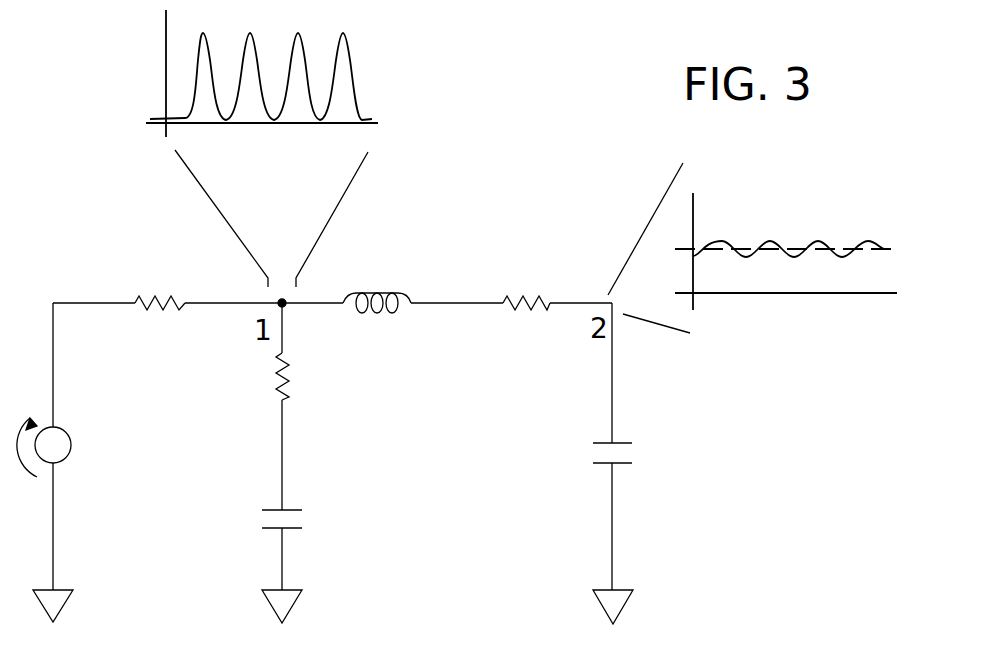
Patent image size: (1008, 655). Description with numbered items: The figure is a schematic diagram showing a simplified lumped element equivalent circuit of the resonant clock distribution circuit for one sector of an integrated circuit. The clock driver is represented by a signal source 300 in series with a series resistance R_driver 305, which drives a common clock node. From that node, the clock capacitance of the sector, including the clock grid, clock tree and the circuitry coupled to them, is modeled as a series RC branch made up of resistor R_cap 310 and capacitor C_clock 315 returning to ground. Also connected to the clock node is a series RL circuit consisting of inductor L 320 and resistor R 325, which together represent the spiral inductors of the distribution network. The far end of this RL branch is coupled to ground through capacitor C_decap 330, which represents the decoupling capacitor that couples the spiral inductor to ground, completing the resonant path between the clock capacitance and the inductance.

The signal source 300 is at (60, 462).
The series resistance R_driver 305 is at (165, 311).
The resistor R_cap 310 is at (278, 376).
The capacitor C_clock 315 is at (273, 531).
The inductor L 320 is at (372, 314).
The resistor R 325 is at (510, 312).
The capacitor C_decap 330 is at (602, 466).